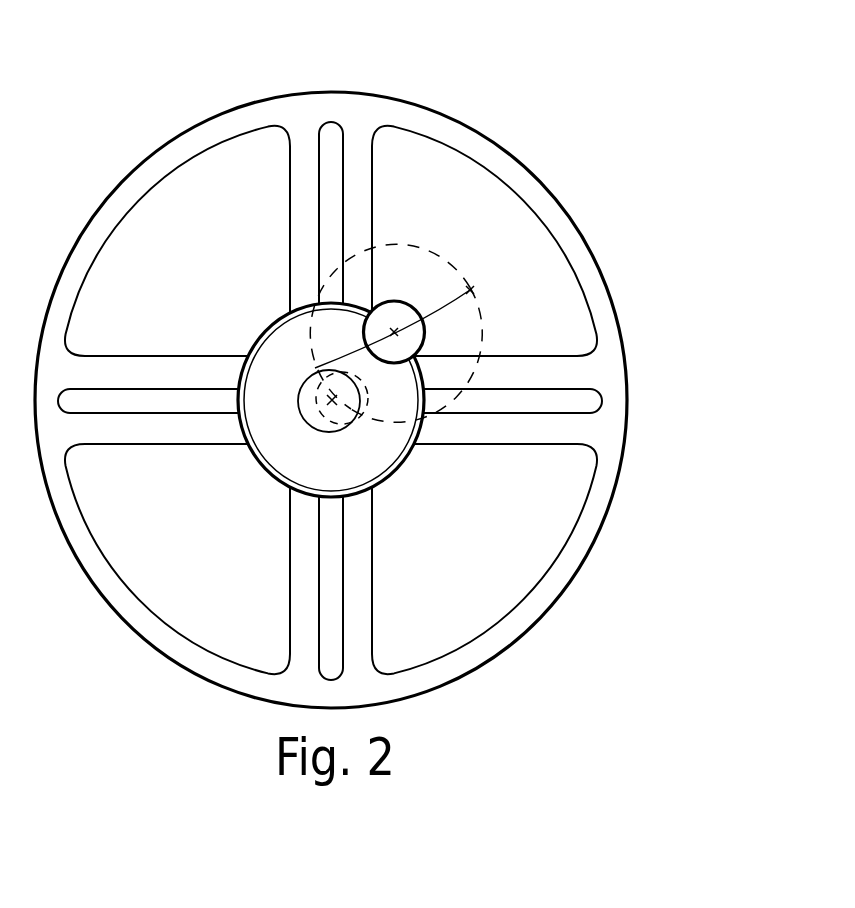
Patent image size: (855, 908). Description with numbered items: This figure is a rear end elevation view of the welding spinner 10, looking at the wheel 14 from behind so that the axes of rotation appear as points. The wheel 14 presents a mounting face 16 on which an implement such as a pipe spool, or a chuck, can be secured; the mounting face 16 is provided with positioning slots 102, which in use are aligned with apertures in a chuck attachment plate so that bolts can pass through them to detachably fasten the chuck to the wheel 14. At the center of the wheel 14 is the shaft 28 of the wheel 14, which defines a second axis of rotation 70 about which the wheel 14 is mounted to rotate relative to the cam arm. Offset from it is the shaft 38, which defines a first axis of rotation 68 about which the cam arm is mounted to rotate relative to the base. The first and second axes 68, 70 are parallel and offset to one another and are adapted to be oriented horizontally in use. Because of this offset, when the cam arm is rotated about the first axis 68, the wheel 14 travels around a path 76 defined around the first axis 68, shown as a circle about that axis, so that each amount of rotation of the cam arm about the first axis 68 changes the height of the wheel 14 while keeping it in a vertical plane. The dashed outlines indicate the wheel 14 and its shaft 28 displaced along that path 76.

The welding spinner 10 is at (537, 112).
The wheel 14 is at (607, 283).
The mounting face 16 is at (640, 505).
The positioning slots 102 is at (173, 412).
The shaft 28 is at (299, 392).
The second axis of rotation 70 is at (318, 431).
The shaft 38 is at (387, 290).
The path 76 is at (486, 347).
The first axis of rotation 68 is at (470, 290).